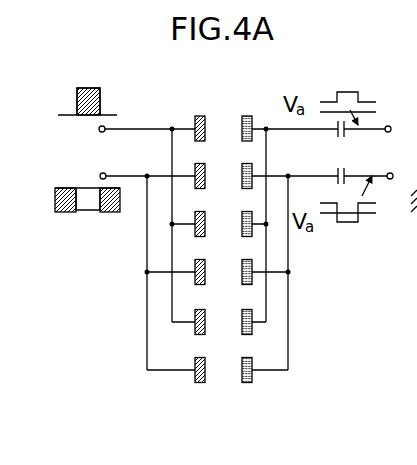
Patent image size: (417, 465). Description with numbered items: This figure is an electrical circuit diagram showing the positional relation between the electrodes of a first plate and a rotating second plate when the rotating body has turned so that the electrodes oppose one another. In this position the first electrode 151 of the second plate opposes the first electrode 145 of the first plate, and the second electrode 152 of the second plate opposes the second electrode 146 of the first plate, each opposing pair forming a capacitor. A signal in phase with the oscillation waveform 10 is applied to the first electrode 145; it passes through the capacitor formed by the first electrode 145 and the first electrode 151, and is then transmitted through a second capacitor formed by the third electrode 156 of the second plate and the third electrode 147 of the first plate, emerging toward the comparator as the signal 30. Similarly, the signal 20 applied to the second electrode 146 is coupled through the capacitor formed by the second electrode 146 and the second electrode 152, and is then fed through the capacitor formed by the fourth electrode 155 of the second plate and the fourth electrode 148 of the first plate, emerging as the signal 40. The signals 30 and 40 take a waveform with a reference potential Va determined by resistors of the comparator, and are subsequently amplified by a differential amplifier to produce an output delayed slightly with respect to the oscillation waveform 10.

The oscillation waveform 10 is at (97, 128).
The signal 20 is at (100, 172).
The signal 30 is at (389, 123).
The signal 40 is at (391, 182).
The first electrode of the first plate 145 is at (207, 115).
The second electrode of the first plate 146 is at (201, 383).
The first electrode of the second plate 151 is at (243, 137).
The second electrode of the second plate 152 is at (256, 352).
The third electrode of the first plate 147 is at (352, 129).
The fourth electrode of the first plate 148 is at (372, 173).
The fourth electrode of the second plate 155 is at (337, 176).
The third electrode of the second plate 156 is at (336, 132).